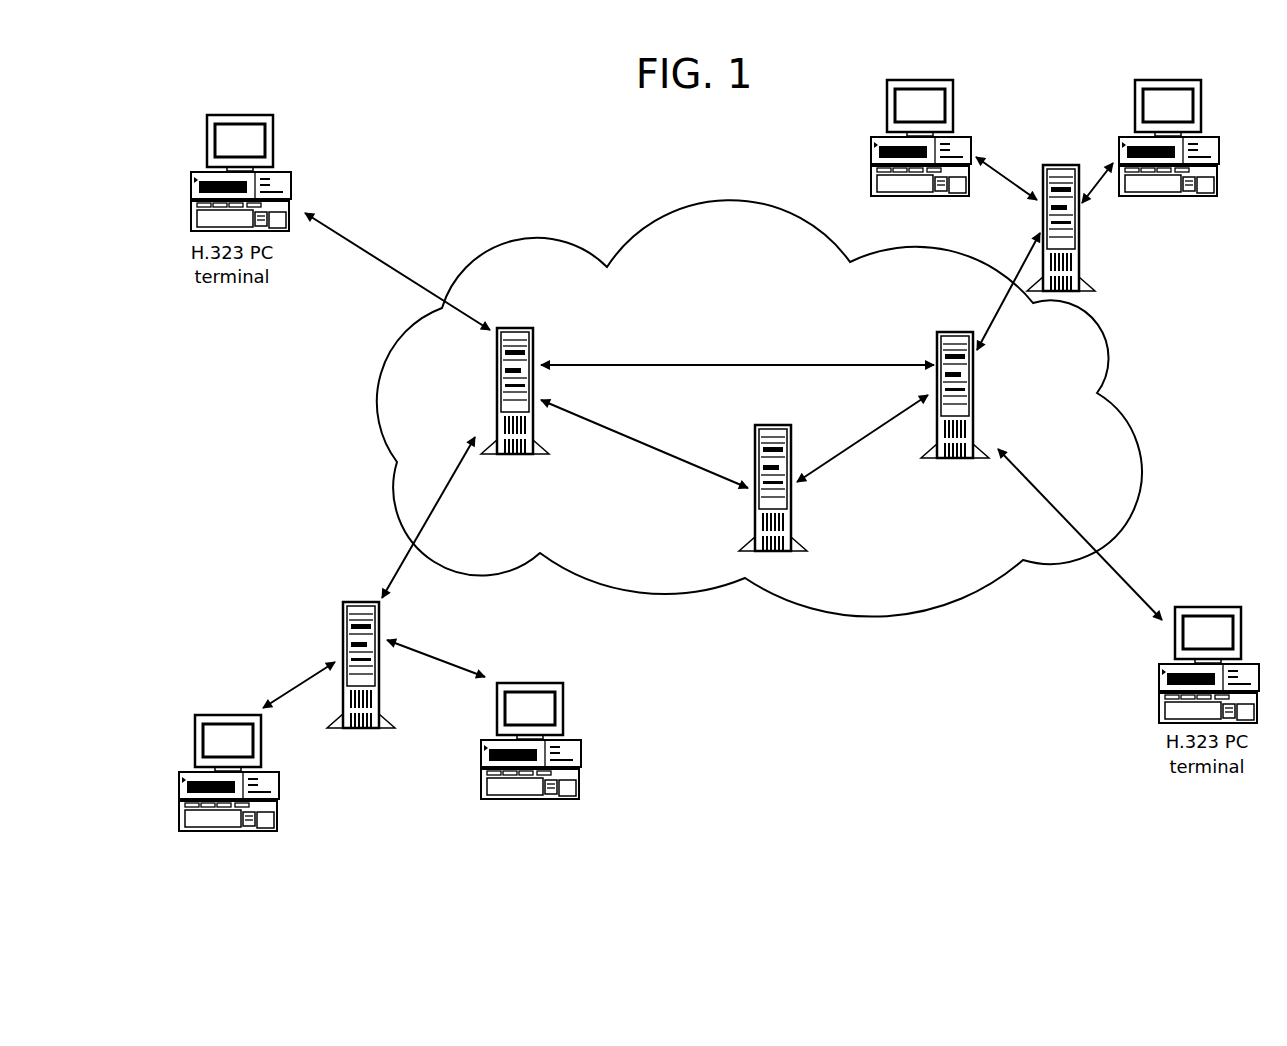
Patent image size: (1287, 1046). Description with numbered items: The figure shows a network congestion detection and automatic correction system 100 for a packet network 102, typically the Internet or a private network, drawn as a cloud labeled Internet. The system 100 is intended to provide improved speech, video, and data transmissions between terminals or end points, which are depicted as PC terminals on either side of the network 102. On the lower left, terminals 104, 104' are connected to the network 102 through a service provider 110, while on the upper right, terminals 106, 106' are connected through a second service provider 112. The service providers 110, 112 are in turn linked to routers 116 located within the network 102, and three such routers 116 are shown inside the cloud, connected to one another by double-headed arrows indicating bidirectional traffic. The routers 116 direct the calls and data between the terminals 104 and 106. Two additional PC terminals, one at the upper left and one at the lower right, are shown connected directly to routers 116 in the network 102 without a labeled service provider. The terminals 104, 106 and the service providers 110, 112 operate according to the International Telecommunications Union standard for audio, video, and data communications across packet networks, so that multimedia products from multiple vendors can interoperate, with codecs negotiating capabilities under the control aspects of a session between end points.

The network congestion detection and automatic correction system 100 is at (540, 143).
The packet network 102 is at (753, 203).
The terminal 104 is at (225, 742).
The terminal 104' is at (549, 718).
The terminal 106 is at (945, 129).
The terminal 106' is at (1188, 118).
The Internet Service Provider 110 is at (343, 613).
The Internet Service Provider 112 is at (1060, 165).
The router 116 is at (520, 328).